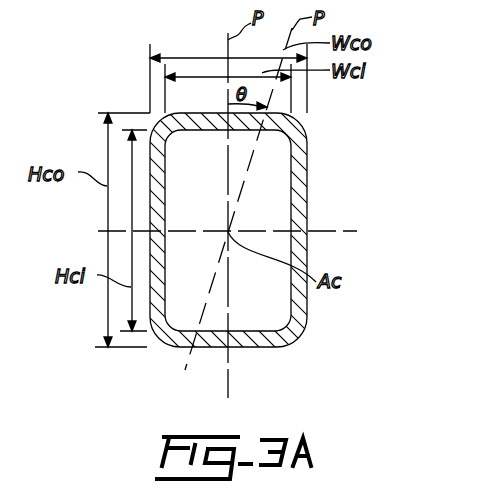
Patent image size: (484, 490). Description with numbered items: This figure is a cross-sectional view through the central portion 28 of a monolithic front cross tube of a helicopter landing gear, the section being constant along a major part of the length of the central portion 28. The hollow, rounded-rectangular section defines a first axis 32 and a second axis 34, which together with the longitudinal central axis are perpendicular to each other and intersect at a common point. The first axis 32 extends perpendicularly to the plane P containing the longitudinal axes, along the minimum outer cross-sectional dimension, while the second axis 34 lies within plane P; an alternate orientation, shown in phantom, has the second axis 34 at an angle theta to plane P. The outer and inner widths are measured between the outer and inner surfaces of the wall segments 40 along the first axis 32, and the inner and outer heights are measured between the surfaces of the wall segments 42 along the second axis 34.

The central portion 28 is at (338, 164).
The first axis 32 is at (340, 232).
The second axis 34 is at (228, 371).
The wall segments 40 is at (299, 298).
The wall segments 42 is at (257, 339).